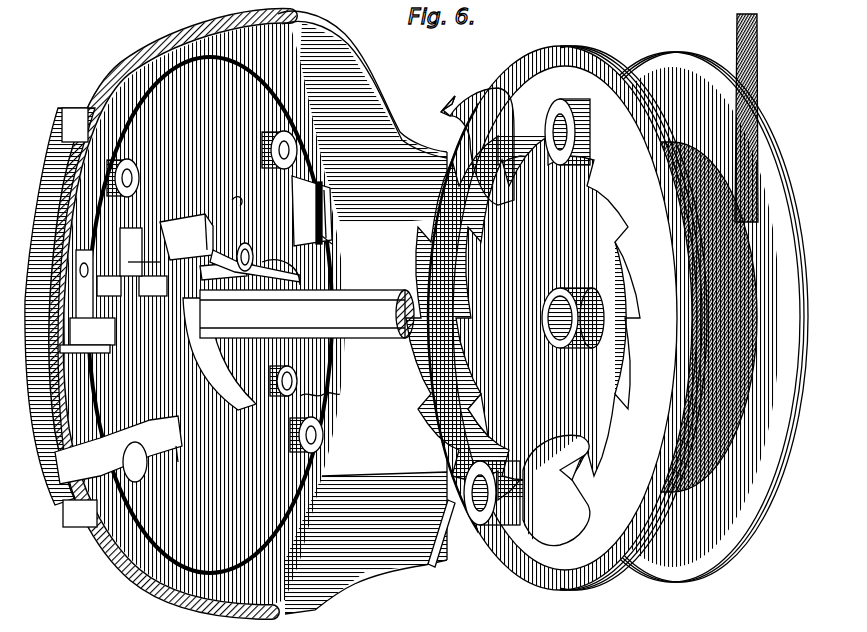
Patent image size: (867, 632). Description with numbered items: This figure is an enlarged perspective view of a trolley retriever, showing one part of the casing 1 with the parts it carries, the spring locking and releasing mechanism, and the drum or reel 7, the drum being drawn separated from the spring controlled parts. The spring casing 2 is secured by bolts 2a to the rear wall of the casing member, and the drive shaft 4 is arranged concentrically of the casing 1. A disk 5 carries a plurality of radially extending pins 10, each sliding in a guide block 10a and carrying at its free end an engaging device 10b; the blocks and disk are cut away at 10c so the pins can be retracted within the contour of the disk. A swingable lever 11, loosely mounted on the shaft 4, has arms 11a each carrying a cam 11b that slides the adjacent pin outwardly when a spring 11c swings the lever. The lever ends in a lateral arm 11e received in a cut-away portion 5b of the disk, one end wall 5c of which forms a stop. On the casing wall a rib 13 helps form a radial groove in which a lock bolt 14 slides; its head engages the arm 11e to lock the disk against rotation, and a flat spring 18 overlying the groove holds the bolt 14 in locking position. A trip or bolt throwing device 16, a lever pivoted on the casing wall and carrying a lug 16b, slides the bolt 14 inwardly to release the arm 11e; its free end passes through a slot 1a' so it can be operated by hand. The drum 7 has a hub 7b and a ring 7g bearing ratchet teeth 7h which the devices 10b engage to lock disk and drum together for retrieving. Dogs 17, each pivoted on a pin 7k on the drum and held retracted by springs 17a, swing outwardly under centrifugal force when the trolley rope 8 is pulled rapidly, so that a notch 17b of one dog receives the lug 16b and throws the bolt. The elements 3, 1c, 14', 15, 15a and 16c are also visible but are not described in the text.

The casing 1 is at (316, 613).
The slot 1a' is at (61, 392).
The housing lever 1c is at (432, 570).
The spring casing 2 is at (50, 152).
The bolts 2a is at (292, 153).
The lug 3 is at (73, 110).
The drive shaft 4 is at (307, 302).
The disk 5 is at (326, 397).
The cut-away portion 5b is at (144, 266).
The end wall 5c is at (236, 202).
The drum or reel 7 is at (676, 317).
The hub 7b is at (566, 288).
The ring 7g is at (630, 266).
The ratchet teeth 7h is at (514, 392).
The pin or stud 7k is at (518, 504).
The trolley rope 8 is at (758, 102).
The pins or rods 10 is at (219, 354).
The guide block 10a is at (223, 276).
The engaging device 10b is at (332, 212).
The cut-away 10c is at (332, 232).
The swingable lever 11 is at (255, 266).
The arms 11a is at (281, 276).
The cam 11b is at (300, 270).
The spring 11c is at (298, 381).
The arm 11e is at (186, 237).
The rib 13 is at (109, 286).
The lock member or bolt 14 is at (92, 331).
The plate 14' is at (153, 286).
The member 15 is at (124, 252).
The member arm 15a is at (78, 348).
The trip or bolt throwing device 16 is at (118, 450).
The lug 16b is at (135, 439).
The lever arm 16c is at (178, 462).
The dogs 17 is at (476, 100).
The springs 17a is at (586, 60).
The notch 17b is at (555, 464).
The flat spring 18 is at (78, 264).